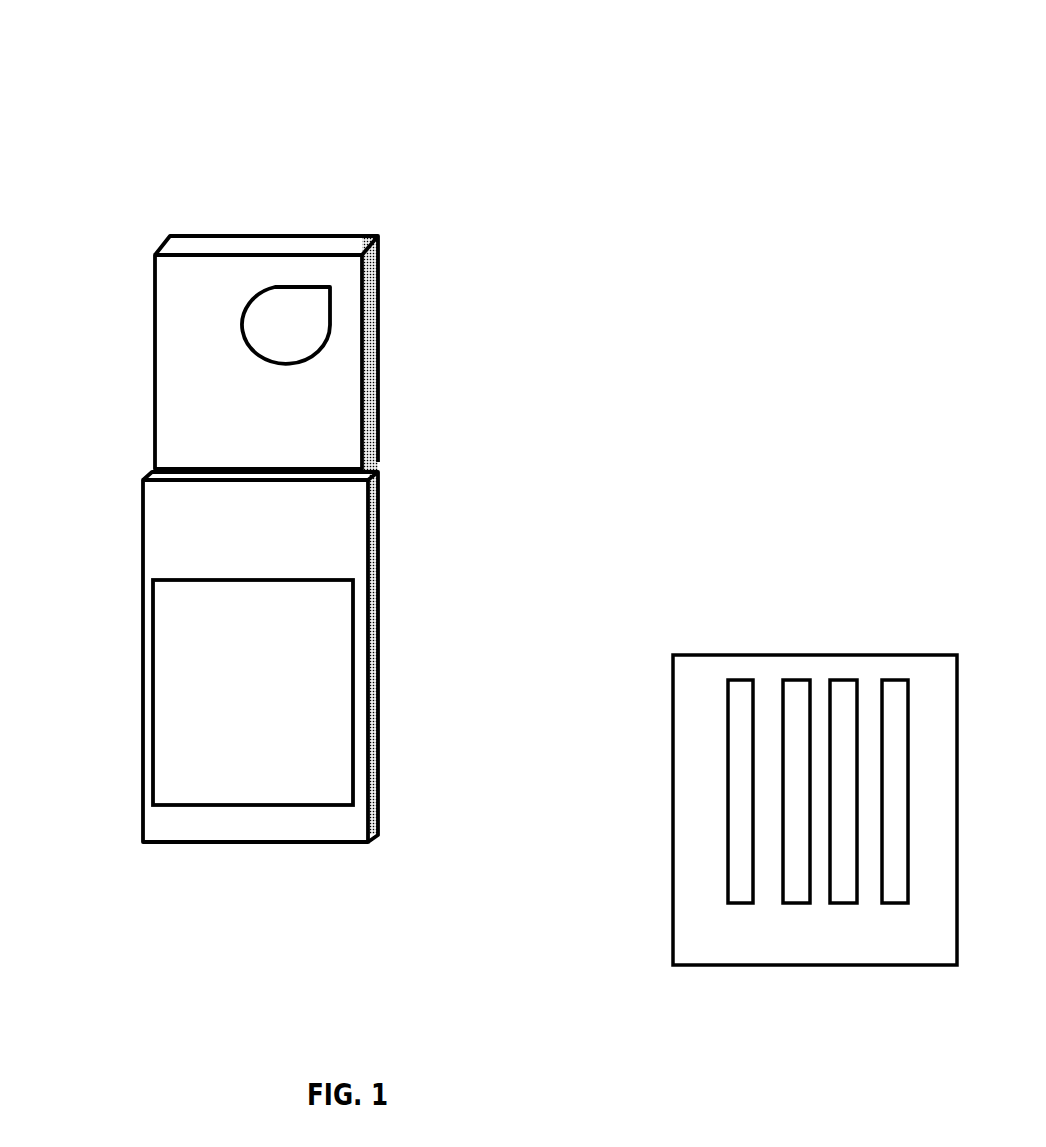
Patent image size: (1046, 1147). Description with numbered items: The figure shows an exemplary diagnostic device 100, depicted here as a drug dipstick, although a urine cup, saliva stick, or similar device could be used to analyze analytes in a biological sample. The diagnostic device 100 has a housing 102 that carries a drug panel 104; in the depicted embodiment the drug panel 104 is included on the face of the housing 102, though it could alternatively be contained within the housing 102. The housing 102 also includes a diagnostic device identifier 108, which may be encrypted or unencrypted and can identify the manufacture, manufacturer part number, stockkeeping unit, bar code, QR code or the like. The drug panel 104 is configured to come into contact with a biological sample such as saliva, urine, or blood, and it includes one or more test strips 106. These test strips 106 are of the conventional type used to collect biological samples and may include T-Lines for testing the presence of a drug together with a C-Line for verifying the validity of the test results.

The diagnostic device 100 is at (290, 152).
The housing 102 is at (149, 326).
The drug panel 104 is at (355, 715).
The test strips 106 is at (897, 671).
The diagnostic device identifier 108 is at (337, 307).